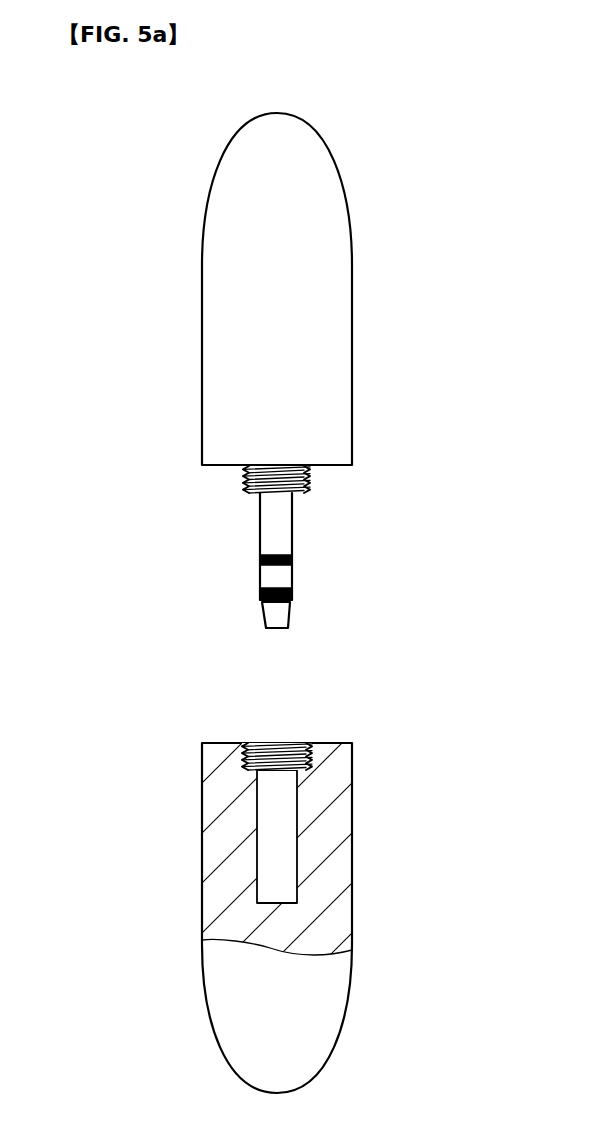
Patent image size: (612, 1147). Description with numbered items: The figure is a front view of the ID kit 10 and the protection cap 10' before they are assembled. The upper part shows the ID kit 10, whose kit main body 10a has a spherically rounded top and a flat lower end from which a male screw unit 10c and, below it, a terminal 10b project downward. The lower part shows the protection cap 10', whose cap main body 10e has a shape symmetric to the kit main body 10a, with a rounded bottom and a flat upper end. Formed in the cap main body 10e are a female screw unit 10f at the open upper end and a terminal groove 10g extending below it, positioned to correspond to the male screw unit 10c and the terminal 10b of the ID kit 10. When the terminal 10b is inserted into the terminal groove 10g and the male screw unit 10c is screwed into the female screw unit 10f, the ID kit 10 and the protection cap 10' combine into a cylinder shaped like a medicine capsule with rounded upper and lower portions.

The ID kit 10 is at (217, 370).
The kit main body 10a is at (228, 344).
The terminal 10b is at (273, 540).
The male screw unit 10c is at (243, 480).
The protection cap 10' is at (306, 900).
The cap main body 10e is at (311, 1007).
The female screw unit 10f is at (310, 755).
The terminal groove 10g is at (296, 862).